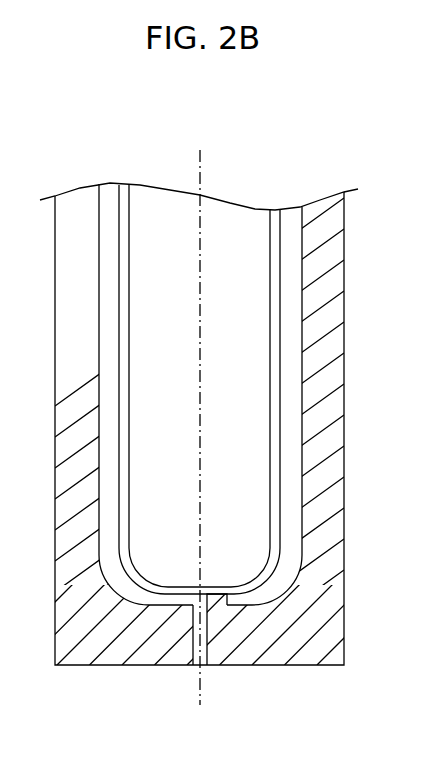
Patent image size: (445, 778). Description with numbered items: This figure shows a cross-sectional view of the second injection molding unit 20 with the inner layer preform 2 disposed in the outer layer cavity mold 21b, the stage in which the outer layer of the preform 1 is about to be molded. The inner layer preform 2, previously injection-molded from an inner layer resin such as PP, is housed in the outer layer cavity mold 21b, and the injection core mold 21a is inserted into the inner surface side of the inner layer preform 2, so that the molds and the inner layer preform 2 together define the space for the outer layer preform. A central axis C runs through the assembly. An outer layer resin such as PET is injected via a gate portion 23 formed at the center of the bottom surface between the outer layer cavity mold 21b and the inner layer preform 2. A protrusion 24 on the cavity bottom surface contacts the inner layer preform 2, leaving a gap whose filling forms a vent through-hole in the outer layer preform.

The preform 1 is at (293, 180).
The second injection molding unit 20 is at (392, 178).
The inner layer preform 2 is at (278, 290).
The injection core mold 21a is at (240, 503).
The outer layer cavity mold 21b is at (328, 346).
The gate portion 23 is at (205, 662).
The protrusion 24 is at (224, 597).
The central axis C is at (203, 168).